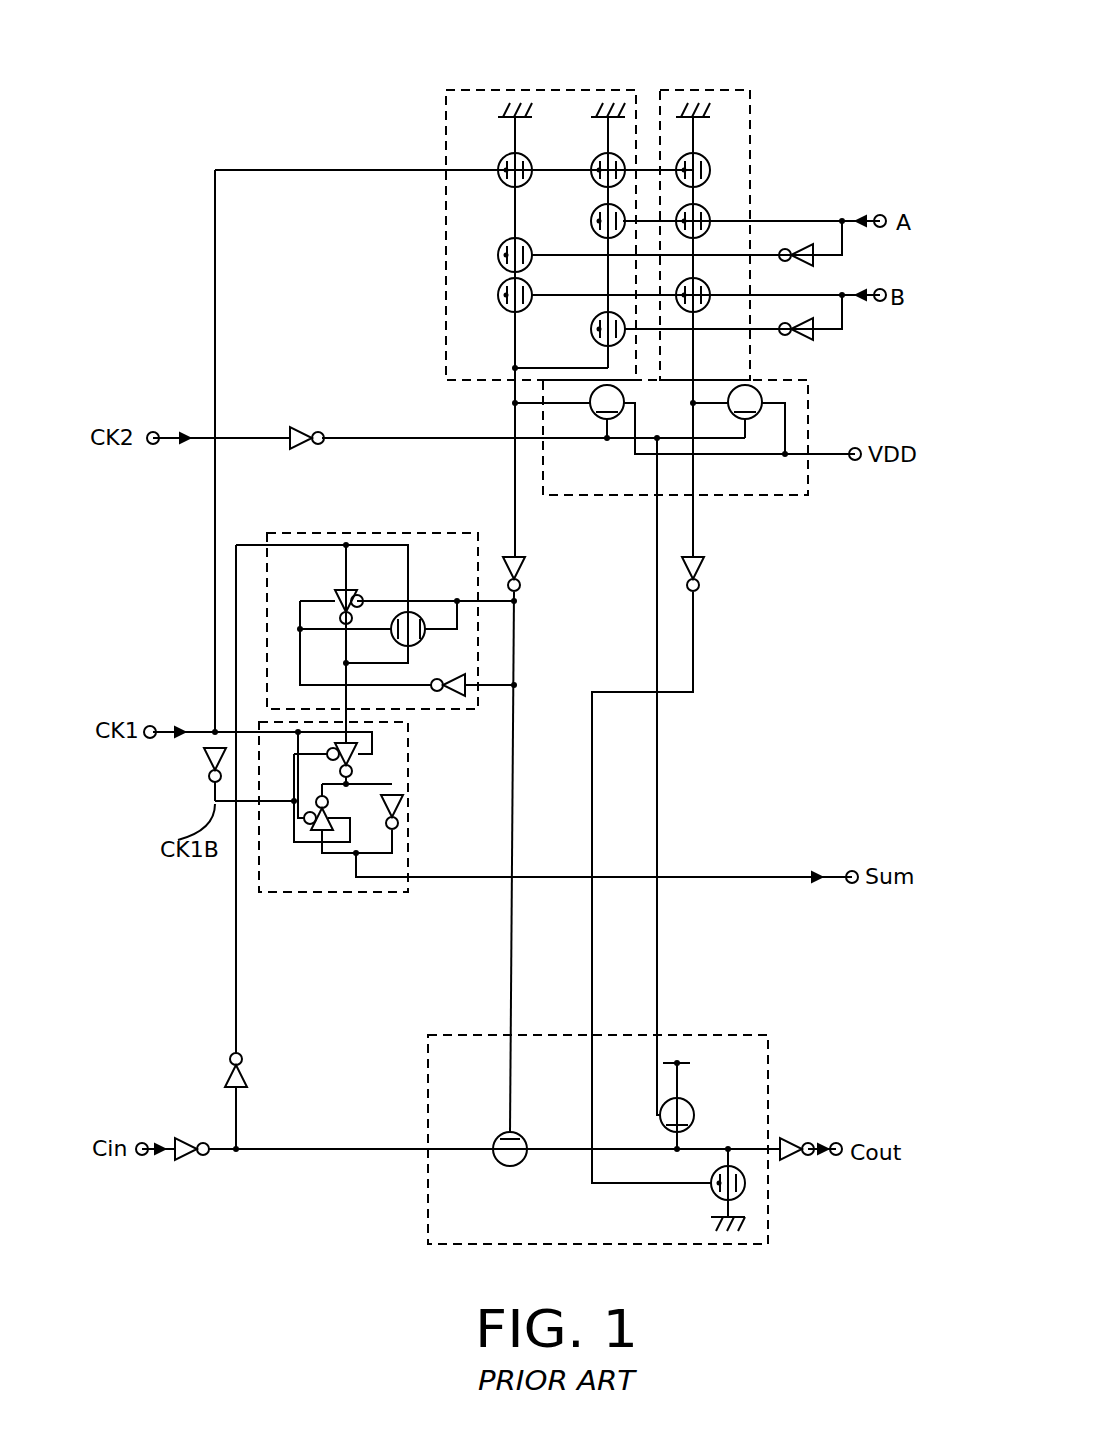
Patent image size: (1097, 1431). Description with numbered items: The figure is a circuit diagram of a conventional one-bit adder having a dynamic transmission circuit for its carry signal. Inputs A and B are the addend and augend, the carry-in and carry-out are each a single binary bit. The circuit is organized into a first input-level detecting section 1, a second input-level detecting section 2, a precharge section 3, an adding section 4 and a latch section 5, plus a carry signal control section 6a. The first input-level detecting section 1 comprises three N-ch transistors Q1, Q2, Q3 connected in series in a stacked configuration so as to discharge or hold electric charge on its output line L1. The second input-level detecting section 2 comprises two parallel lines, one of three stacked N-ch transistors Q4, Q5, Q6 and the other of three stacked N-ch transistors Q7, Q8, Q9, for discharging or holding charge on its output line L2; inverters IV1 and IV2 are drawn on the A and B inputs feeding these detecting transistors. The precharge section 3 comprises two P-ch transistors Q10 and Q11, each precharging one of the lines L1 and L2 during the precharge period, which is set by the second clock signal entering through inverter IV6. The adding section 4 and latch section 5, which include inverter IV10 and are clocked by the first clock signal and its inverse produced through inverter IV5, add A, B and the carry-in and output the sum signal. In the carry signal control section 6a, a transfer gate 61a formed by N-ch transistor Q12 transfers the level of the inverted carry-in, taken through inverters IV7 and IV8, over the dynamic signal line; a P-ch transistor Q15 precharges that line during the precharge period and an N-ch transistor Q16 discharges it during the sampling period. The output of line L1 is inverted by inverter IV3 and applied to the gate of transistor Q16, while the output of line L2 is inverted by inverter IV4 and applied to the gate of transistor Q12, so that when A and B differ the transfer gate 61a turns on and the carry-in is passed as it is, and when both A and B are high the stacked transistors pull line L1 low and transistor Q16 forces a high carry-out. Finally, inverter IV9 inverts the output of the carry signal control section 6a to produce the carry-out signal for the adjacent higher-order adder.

The first input-level detecting section 1 is at (690, 88).
The second input-level detecting section 2 is at (446, 128).
The precharge section 3 is at (758, 497).
The adding section 4 is at (318, 532).
The latch section 5 is at (312, 894).
The carry signal control section 6a is at (663, 1035).
The transfer gate 61a is at (597, 1197).
The N-ch transistor Q1 is at (705, 161).
The N-ch transistor Q2 is at (712, 225).
The N-ch transistor Q3 is at (712, 300).
The N-ch transistor Q4 is at (581, 158).
The N-ch transistor Q5 is at (588, 211).
The N-ch transistor Q6 is at (588, 330).
The N-ch transistor Q7 is at (492, 172).
The N-ch transistor Q8 is at (503, 257).
The N-ch transistor Q9 is at (503, 301).
The P-ch transistor Q10 is at (617, 432).
The P-ch transistor Q11 is at (752, 432).
The N-ch transistor Q12 is at (498, 1141).
The P-ch transistor Q15 is at (686, 1097).
The N-ch transistor Q16 is at (702, 1185).
The inverter IV1 is at (799, 228).
The inverter IV2 is at (824, 349).
The inverter IV3 is at (709, 585).
The inverter IV4 is at (537, 574).
The inverter IV5 is at (190, 774).
The inverter IV6 is at (304, 422).
The inverter IV7 is at (193, 1164).
The inverter IV8 is at (209, 1070).
The inverter IV9 is at (802, 1130).
The inverter IV10 is at (421, 648).
The output line L1 is at (693, 525).
The output line L2 is at (515, 525).